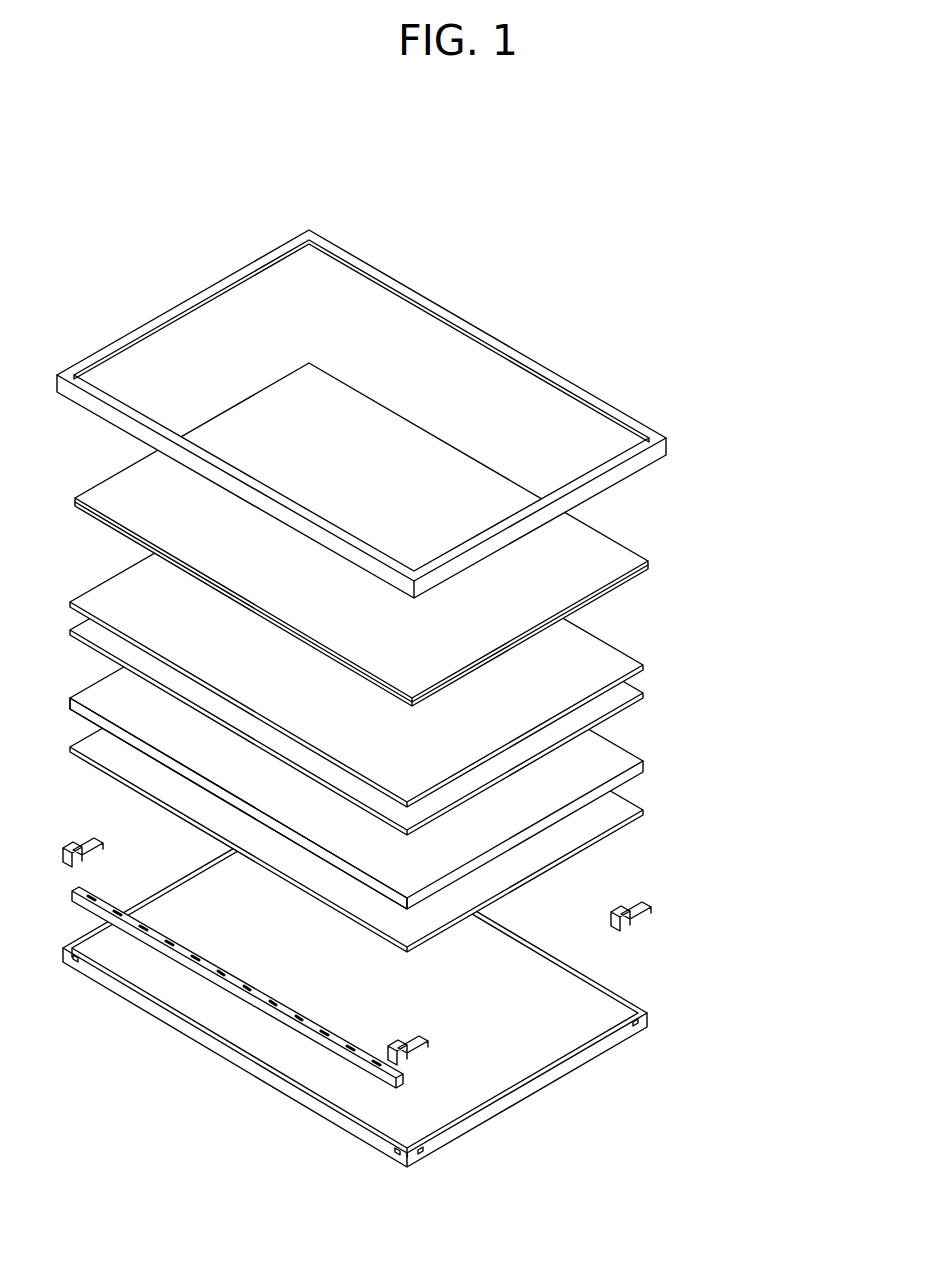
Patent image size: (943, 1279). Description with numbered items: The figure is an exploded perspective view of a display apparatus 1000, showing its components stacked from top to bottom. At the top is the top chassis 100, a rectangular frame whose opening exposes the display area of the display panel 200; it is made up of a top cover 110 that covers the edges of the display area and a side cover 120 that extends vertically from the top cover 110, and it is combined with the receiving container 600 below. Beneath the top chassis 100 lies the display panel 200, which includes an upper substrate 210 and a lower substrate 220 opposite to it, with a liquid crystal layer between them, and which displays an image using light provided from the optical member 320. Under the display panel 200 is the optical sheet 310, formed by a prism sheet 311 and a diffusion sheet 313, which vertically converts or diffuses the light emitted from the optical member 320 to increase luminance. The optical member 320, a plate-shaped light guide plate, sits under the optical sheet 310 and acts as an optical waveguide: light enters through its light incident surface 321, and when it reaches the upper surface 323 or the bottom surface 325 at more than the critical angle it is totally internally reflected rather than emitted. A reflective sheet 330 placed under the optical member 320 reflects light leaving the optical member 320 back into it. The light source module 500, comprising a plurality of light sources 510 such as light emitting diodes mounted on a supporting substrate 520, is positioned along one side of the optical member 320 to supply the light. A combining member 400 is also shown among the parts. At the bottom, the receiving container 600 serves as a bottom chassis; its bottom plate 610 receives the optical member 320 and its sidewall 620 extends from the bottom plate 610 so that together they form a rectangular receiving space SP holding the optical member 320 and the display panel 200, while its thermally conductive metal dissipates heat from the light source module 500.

The display apparatus 1000 is at (443, 192).
The top chassis 100 is at (394, 414).
The top cover 110 is at (63, 372).
The side cover 120 is at (60, 394).
The display panel 200 is at (430, 534).
The upper substrate 210 is at (648, 560).
The lower substrate 220 is at (648, 567).
The optical sheet 310 is at (427, 651).
The prism sheet 311 is at (643, 667).
The diffusion sheet 313 is at (643, 695).
The optical member 320 is at (380, 736).
The light incident surface 321 is at (130, 740).
The upper surface 323 is at (93, 690).
The bottom surface 325 is at (82, 715).
The reflective sheet 330 is at (643, 813).
The combining member 400 is at (652, 916).
The light source module 500 is at (401, 995).
The light sources 510 is at (180, 945).
The supporting substrate 520 is at (222, 988).
The receiving container 600 is at (397, 996).
The bottom plate 610 is at (480, 1088).
The sidewall 620 is at (445, 1135).
The receiving space SP is at (568, 1013).